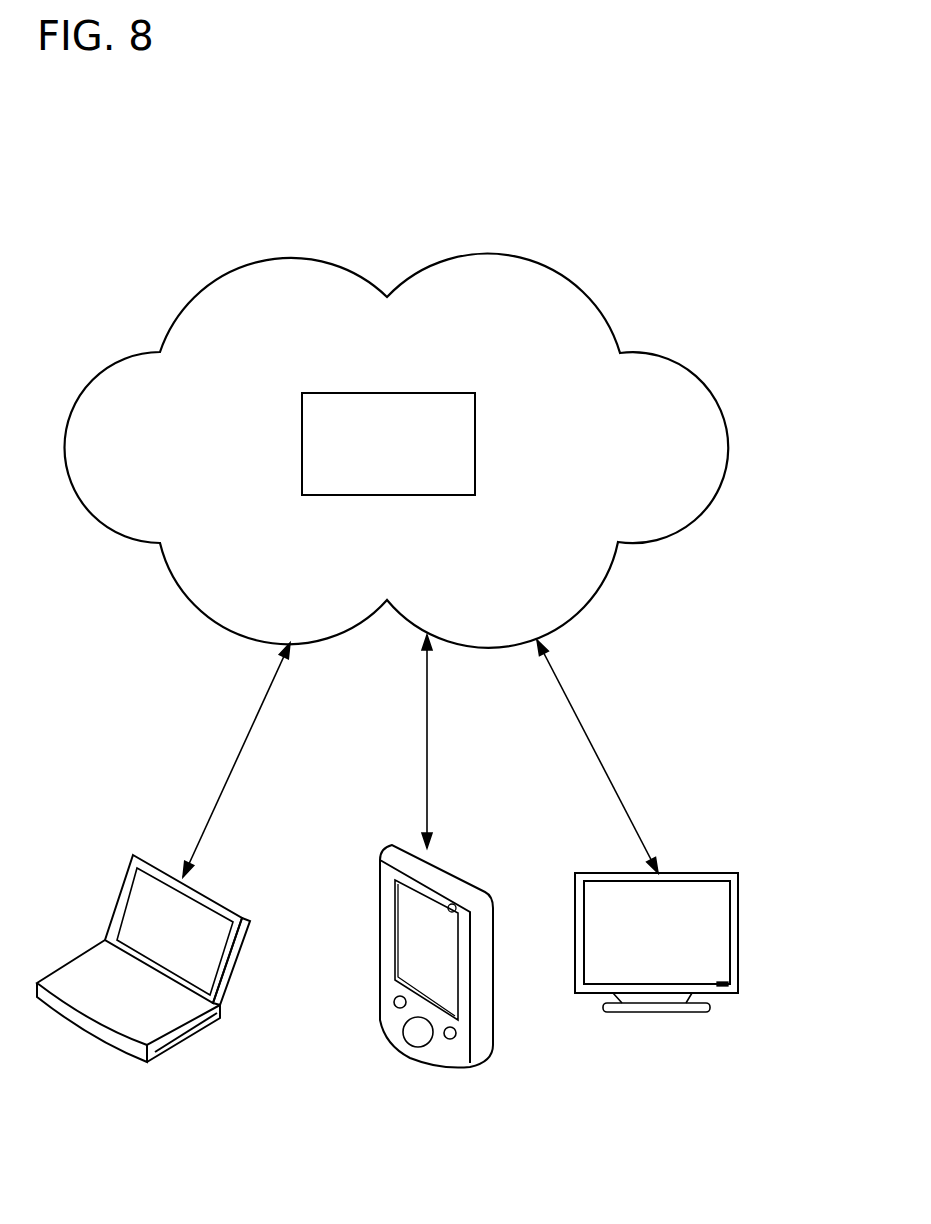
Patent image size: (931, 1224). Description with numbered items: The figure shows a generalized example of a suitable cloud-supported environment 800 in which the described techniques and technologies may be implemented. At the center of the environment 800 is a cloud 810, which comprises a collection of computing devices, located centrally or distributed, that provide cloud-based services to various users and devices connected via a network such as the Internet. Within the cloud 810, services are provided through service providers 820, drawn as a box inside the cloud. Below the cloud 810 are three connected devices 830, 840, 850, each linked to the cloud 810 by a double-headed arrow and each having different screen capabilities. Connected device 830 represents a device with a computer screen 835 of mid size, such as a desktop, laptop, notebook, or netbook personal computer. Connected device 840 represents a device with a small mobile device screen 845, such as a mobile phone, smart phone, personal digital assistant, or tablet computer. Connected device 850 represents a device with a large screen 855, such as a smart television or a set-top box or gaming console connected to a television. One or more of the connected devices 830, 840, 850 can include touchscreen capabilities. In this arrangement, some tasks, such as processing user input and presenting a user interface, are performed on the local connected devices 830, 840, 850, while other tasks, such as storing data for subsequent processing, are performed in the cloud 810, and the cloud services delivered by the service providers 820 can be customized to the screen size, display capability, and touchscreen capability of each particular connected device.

The cloud-supported environment 800 is at (684, 248).
The cloud 810 is at (405, 362).
The service providers 820 is at (405, 482).
The connected device 830 is at (141, 958).
The computer screen 835 is at (190, 944).
The connected device 840 is at (434, 930).
The mobile device screen 845 is at (447, 966).
The connected device 850 is at (656, 918).
The large screen 855 is at (673, 944).